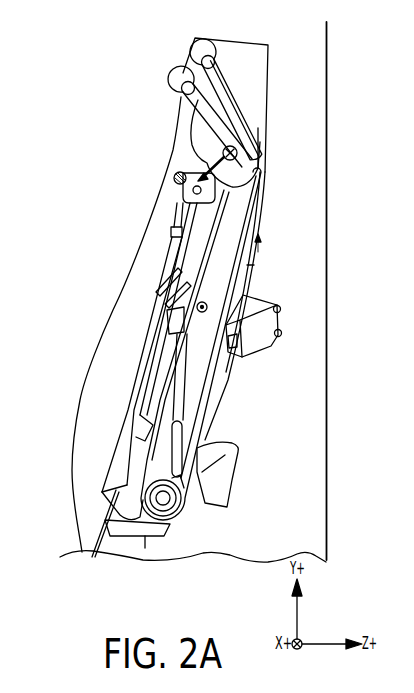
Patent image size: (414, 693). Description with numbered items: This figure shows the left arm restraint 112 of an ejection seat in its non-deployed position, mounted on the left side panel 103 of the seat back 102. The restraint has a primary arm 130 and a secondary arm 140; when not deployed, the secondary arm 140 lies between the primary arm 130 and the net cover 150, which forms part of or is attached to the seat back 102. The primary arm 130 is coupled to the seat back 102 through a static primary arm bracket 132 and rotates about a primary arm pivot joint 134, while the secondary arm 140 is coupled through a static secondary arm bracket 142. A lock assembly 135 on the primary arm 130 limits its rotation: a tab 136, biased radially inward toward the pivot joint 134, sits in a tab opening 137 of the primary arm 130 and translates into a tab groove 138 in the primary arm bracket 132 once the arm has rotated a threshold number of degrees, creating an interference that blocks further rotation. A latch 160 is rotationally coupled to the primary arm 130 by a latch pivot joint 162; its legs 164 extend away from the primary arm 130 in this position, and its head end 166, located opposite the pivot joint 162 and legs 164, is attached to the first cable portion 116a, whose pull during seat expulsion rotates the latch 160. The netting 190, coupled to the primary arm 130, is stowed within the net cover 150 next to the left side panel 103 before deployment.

The seat back 102 is at (327, 44).
The left side panel 103 is at (308, 366).
The left arm restraint 112 is at (70, 148).
The first cable portion 116a is at (166, 262).
The primary arm 130 is at (236, 206).
The primary arm bracket 132 is at (224, 480).
The primary arm pivot joint 134 is at (164, 508).
The lock assembly 135 is at (250, 418).
The tab 136 is at (184, 424).
The tab opening 137 is at (182, 492).
The tab groove 138 is at (118, 498).
The secondary arm 140 is at (262, 132).
The secondary arm bracket 142 is at (254, 328).
The net cover 150 is at (127, 313).
The latch 160 is at (238, 229).
The latch pivot joint 162 is at (208, 306).
The legs 164 is at (174, 305).
The head end 166 is at (174, 172).
The netting 190 is at (224, 148).